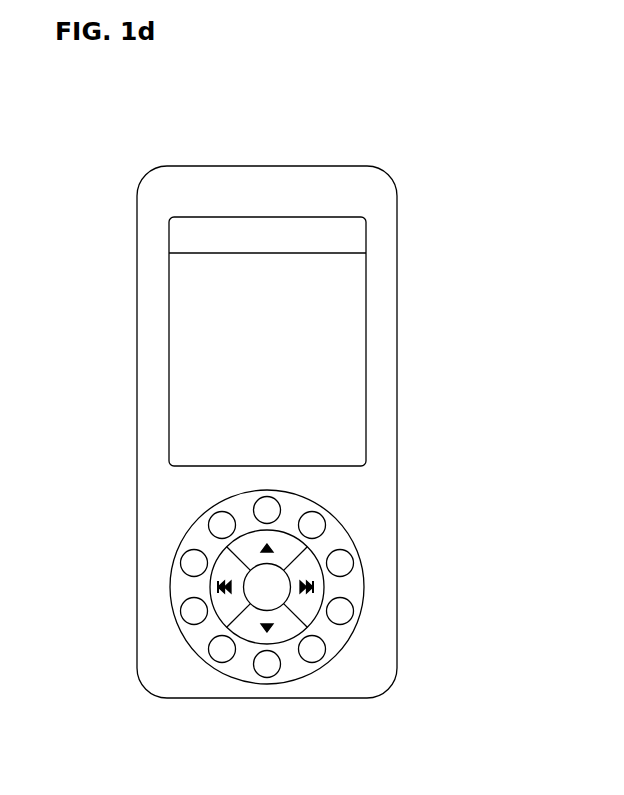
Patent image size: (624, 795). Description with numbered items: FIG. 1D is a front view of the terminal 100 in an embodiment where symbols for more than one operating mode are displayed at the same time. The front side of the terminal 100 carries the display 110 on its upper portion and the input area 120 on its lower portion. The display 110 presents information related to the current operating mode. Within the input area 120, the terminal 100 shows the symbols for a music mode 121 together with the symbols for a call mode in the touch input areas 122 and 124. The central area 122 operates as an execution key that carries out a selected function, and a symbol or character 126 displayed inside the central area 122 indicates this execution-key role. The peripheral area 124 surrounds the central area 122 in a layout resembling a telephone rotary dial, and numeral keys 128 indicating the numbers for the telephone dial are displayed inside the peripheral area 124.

The terminal 100 is at (308, 128).
The display 110 is at (380, 334).
The input area 120 is at (378, 566).
The symbols 121 is at (302, 558).
The central area 122 is at (244, 594).
The peripheral area 124 is at (197, 635).
The symbol or character 126 is at (270, 578).
The numeral keys 128 is at (343, 608).